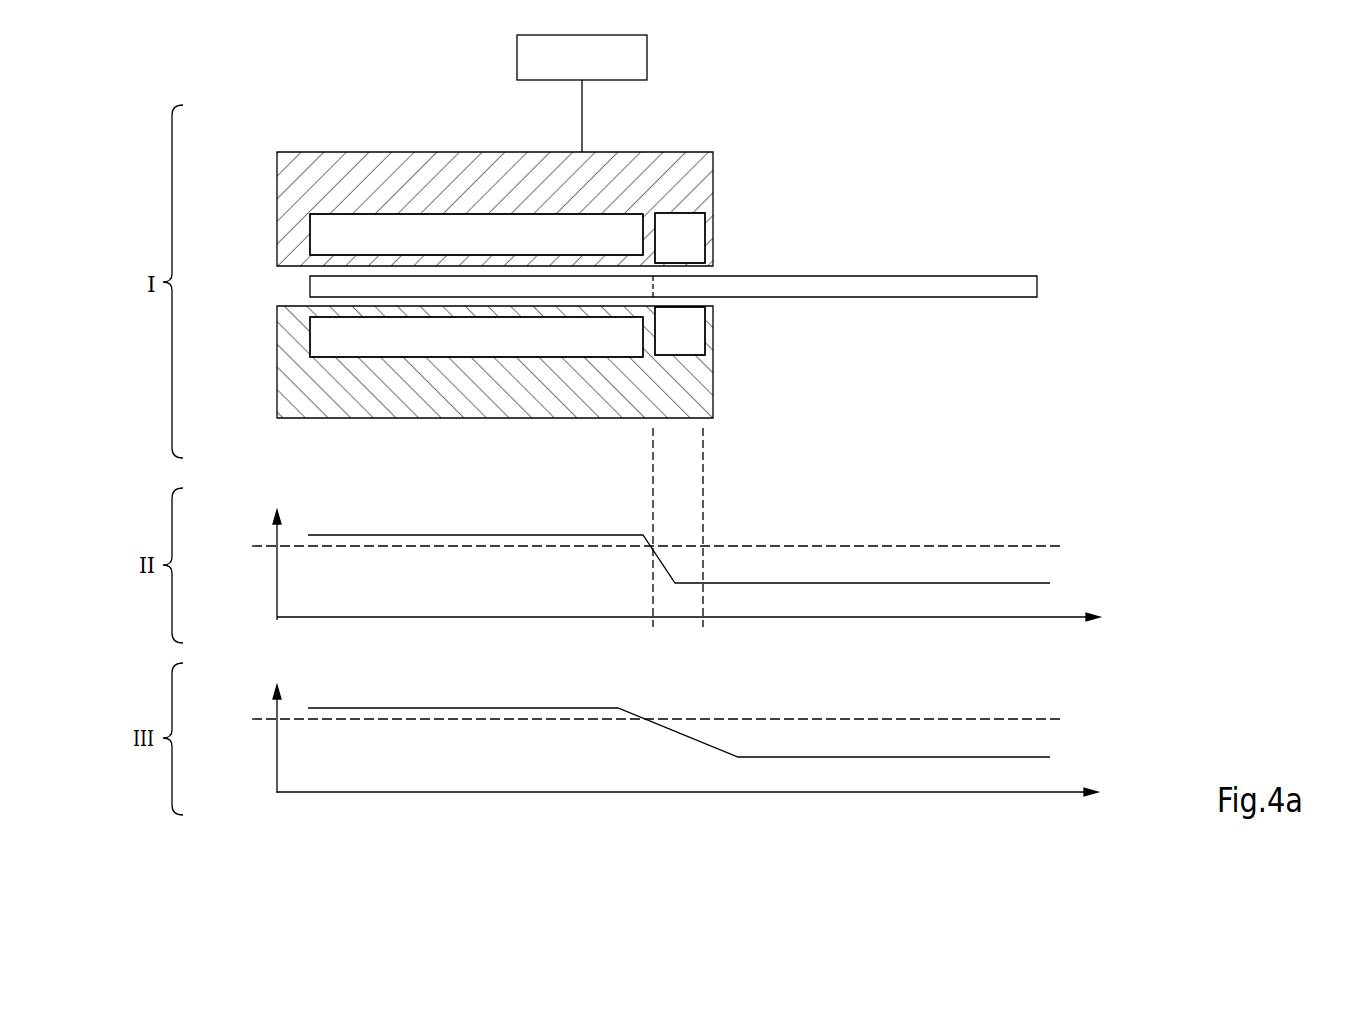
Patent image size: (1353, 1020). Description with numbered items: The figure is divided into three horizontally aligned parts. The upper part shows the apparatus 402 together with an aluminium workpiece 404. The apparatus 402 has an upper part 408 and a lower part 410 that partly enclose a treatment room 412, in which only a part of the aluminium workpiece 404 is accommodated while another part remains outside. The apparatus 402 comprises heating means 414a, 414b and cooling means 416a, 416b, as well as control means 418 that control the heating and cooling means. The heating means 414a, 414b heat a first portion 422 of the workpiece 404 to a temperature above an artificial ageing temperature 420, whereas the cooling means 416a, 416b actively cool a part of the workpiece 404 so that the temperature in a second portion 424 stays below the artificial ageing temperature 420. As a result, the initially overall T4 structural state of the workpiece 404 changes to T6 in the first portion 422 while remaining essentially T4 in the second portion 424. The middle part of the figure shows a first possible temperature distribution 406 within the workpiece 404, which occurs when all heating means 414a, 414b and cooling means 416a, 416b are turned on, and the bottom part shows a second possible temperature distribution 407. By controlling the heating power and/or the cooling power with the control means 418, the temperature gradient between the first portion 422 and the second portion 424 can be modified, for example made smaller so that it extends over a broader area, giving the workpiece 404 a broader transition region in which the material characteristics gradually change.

The apparatus 402 is at (742, 123).
The aluminium workpiece 404 is at (327, 287).
The first possible temperature distribution 406 is at (1110, 539).
The second possible temperature distribution 407 is at (1110, 712).
The upper part 408 is at (330, 165).
The lower part 410 is at (330, 407).
The treatment room 412 is at (265, 276).
The heating means 414a is at (412, 225).
The heating means 414b is at (413, 345).
The cooling means 416a is at (690, 233).
The cooling means 416b is at (693, 338).
The control means 418 is at (600, 68).
The artificial ageing temperature 420 is at (265, 548).
The first portion 422 is at (492, 287).
The second portion 424 is at (888, 283).